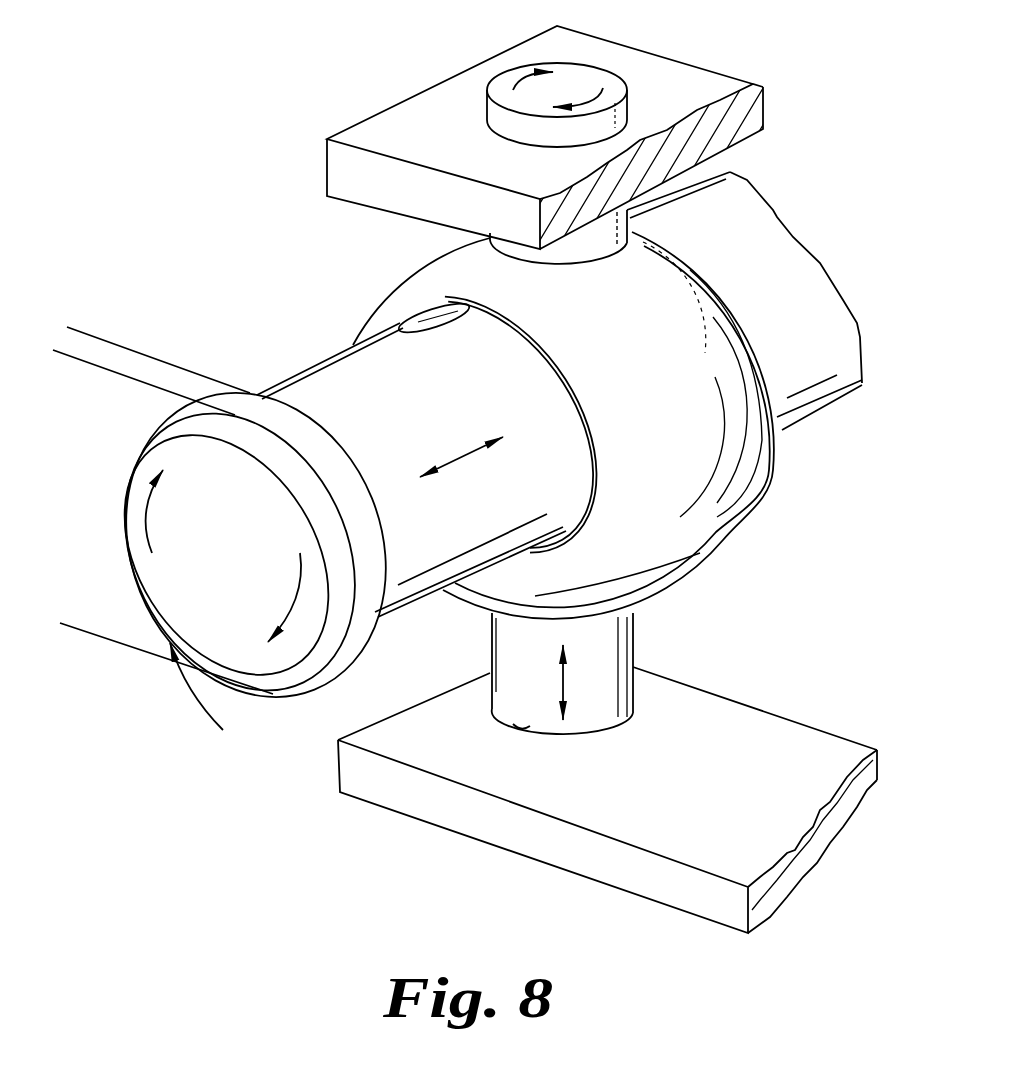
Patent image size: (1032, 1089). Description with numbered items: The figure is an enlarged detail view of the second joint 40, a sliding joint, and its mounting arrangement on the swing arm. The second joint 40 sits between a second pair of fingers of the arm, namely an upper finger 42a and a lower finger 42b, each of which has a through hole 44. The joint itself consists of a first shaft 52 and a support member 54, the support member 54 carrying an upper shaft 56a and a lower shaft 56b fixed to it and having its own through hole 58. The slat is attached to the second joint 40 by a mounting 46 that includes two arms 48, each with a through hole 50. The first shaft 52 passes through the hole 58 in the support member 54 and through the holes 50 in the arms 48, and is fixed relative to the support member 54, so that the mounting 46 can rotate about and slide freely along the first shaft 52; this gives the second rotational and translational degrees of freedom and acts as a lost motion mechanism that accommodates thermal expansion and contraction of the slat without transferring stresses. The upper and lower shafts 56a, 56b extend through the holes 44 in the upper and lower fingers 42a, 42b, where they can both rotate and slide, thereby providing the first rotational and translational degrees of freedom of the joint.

The second joint 40 is at (240, 198).
The upper finger 42a is at (723, 93).
The lower finger 42b is at (793, 740).
The through hole 44 is at (652, 110).
The mounting 46 is at (213, 696).
The arm 48 is at (113, 612).
The through hole 50 is at (307, 662).
The first shaft 52 is at (419, 567).
The support member 54 is at (627, 567).
The upper shaft 56a is at (575, 72).
The lower shaft 56b is at (613, 655).
The through hole 58 is at (403, 323).